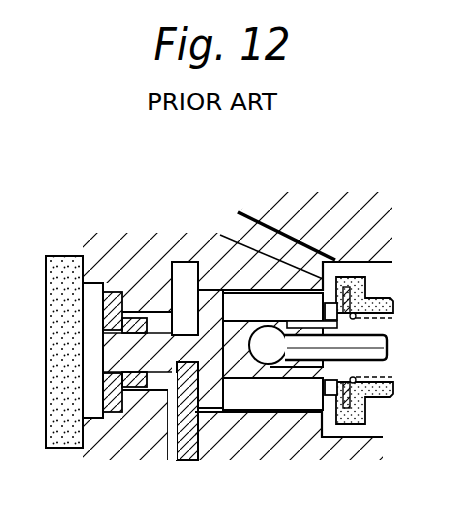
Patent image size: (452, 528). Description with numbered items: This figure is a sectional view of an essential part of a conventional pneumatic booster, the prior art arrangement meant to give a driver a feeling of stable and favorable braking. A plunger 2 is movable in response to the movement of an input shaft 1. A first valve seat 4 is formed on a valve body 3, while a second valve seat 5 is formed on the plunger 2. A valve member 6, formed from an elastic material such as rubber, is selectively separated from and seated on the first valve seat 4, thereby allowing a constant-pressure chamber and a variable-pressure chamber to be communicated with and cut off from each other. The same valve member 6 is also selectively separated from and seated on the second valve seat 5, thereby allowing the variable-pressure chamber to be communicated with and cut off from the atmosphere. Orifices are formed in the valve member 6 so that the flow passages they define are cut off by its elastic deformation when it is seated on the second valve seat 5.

The input shaft 1 is at (378, 343).
The plunger 2 is at (213, 397).
The valve body 3 is at (348, 222).
The first valve seat 4 is at (322, 422).
The second valve seat 5 is at (322, 380).
The valve member 6 is at (353, 425).